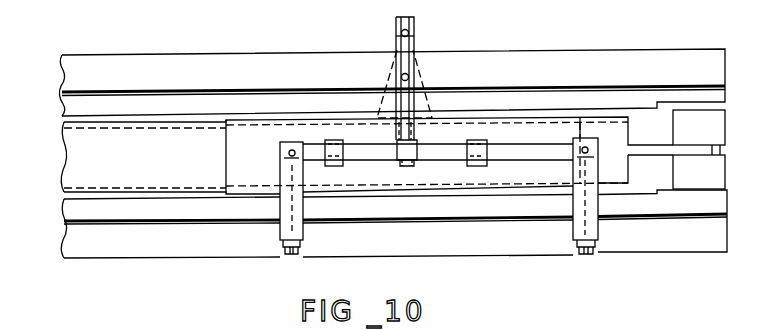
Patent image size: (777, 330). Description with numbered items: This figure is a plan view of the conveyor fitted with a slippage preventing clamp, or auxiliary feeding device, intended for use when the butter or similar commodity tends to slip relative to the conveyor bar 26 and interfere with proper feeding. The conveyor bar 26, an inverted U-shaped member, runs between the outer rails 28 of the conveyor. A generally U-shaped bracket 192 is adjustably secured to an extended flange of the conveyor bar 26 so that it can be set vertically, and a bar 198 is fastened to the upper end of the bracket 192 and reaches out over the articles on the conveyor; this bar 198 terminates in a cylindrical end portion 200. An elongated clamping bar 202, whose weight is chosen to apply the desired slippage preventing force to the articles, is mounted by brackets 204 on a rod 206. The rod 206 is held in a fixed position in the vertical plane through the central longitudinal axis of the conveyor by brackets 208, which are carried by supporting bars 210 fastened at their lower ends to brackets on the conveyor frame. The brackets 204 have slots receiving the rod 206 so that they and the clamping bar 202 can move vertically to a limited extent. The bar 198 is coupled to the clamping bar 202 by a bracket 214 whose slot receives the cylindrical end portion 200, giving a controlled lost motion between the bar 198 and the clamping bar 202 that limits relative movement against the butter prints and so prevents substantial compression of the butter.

The conveyor bar 26 is at (76, 163).
The rail 28 is at (200, 63).
The U-shaped bracket 192 is at (412, 43).
The bar 198 is at (404, 63).
The cylindrical end portion 200 is at (414, 137).
The clamping bar 202 is at (236, 148).
The brackets 204 is at (343, 163).
The rod or bar 206 is at (500, 157).
The brackets 208 is at (293, 197).
The supporting bars 210 is at (283, 245).
The bracket 214 is at (414, 166).